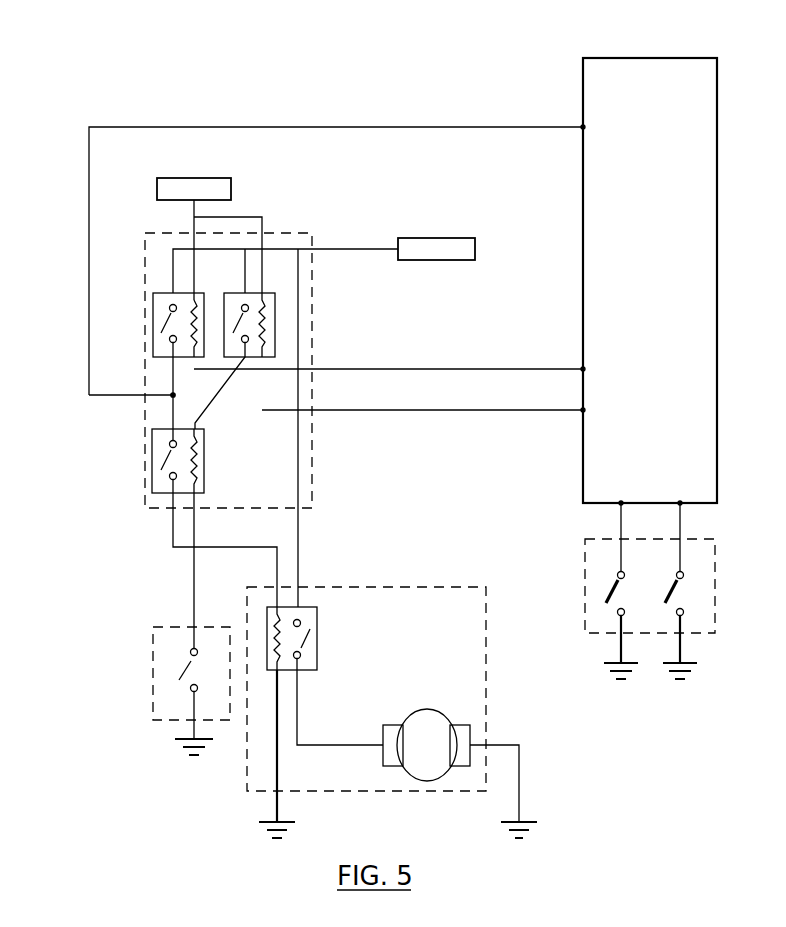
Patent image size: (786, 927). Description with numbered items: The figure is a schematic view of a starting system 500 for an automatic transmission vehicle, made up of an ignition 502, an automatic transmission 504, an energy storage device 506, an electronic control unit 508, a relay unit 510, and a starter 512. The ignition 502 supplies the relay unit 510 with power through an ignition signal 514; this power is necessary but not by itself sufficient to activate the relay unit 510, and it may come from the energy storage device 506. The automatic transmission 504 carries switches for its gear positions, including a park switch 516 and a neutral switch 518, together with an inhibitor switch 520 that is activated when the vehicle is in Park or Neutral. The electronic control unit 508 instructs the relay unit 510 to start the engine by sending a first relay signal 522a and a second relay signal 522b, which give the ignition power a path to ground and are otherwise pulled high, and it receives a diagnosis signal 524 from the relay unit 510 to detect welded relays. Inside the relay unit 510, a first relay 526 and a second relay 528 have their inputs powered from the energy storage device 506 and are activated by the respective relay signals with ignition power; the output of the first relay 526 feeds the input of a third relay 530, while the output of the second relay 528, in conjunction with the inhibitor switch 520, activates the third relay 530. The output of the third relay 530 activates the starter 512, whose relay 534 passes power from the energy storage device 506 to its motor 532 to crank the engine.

The starting system 500 is at (74, 54).
The ignition 502 is at (194, 178).
The automatic transmission 504 is at (592, 541).
The energy storage device 506 is at (442, 238).
The electronic control unit 508 is at (654, 61).
The relay unit 510 is at (155, 233).
The starter 512 is at (453, 587).
The ignition signal 514 is at (262, 217).
The park switch 516 is at (587, 612).
The neutral switch 518 is at (712, 590).
The inhibitor switch 520 is at (160, 690).
The first relay signal 522a is at (500, 369).
The second relay signal 522b is at (493, 410).
The diagnosis signal 524 is at (489, 127).
The first relay 526 is at (153, 321).
The second relay 528 is at (275, 318).
The third relay 530 is at (152, 466).
The motor 532 is at (429, 710).
The relay 534 is at (318, 634).